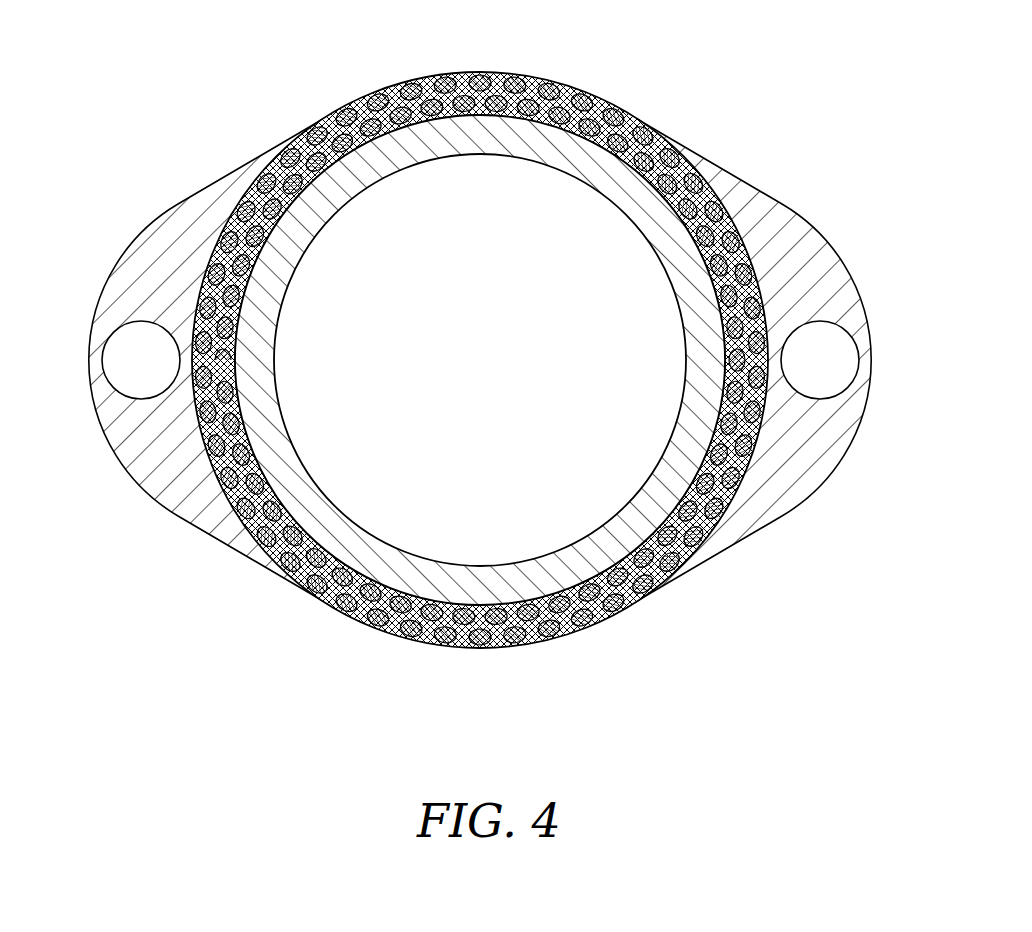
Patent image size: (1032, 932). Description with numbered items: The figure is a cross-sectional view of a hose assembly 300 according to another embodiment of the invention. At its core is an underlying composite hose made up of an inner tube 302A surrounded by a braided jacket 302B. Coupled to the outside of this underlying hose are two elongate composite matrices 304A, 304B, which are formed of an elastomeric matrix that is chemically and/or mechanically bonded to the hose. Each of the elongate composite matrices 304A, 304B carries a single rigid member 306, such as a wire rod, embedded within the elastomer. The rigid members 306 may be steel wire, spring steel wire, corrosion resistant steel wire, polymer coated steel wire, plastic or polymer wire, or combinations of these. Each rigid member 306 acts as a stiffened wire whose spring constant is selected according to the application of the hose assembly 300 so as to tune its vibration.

The hose assembly 300 is at (478, 377).
The inner tube 302A is at (484, 73).
The braided jacket 302B is at (492, 648).
The elongate composite matrix 304A is at (855, 415).
The elongate composite matrix 304B is at (148, 283).
The rigid member 306 is at (130, 358).